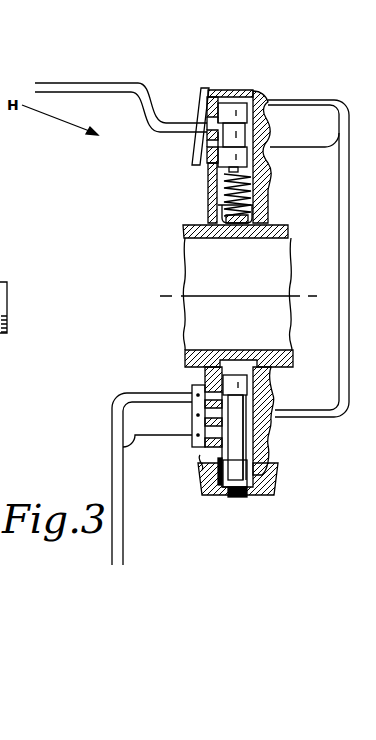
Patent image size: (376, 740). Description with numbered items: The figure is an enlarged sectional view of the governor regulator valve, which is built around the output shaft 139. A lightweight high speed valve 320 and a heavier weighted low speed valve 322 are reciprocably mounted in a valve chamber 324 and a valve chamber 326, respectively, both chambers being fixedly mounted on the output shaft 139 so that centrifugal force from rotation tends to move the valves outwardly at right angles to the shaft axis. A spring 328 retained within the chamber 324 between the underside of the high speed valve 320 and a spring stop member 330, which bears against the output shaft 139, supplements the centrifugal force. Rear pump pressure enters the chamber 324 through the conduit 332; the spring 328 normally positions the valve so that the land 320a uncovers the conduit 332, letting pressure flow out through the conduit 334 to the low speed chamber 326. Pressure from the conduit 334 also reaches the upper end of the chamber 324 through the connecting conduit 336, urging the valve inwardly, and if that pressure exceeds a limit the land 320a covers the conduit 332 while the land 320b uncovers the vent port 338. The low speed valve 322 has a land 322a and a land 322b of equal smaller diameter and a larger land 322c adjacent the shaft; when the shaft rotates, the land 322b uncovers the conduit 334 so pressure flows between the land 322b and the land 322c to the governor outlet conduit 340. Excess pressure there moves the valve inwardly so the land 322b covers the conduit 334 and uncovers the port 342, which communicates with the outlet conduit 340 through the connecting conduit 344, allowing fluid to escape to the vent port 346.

The output shaft 139 is at (193, 253).
The high speed valve 320 is at (263, 95).
The land 320a is at (266, 120).
The land 320b is at (268, 162).
The low speed valve 322 is at (265, 448).
The land 322a is at (275, 478).
The land 322b is at (271, 404).
The land 322c is at (265, 378).
The valve chamber 324 is at (217, 92).
The valve chamber 326 is at (265, 430).
The spring 328 is at (250, 183).
The spring stop member 330 is at (267, 215).
The conduit 332 is at (140, 92).
The conduit 334 is at (337, 281).
The connecting conduit 336 is at (312, 103).
The vent port 338 is at (204, 155).
The governor outlet conduit 340 is at (162, 392).
The port 342 is at (218, 437).
The connecting conduit 344 is at (182, 427).
The vent port 346 is at (200, 458).